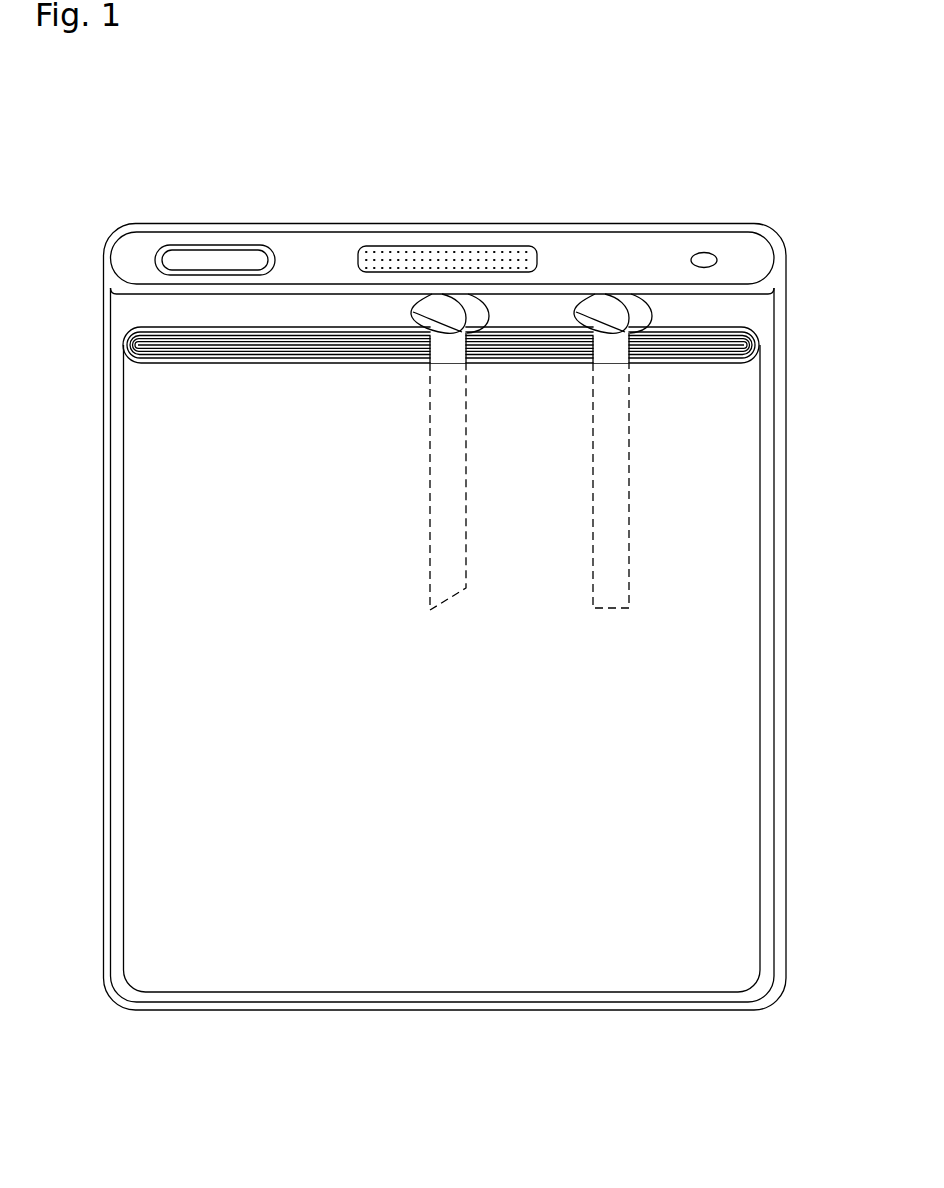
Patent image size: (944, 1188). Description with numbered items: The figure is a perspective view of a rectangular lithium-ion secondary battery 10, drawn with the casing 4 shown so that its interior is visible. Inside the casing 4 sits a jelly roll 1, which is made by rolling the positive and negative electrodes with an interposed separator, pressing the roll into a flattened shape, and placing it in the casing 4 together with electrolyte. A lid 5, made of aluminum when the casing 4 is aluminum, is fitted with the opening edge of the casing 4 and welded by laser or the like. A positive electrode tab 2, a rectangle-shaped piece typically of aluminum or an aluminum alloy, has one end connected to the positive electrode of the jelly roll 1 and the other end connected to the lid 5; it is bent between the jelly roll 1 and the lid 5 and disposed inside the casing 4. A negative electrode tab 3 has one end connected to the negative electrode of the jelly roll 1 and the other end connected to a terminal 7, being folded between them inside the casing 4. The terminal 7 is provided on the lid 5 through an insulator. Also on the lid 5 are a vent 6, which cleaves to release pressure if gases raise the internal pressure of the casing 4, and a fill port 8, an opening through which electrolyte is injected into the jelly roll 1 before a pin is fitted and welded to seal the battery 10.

The lithium-ion secondary battery 10 is at (466, 125).
The jelly roll 1 is at (133, 636).
The positive electrode tab 2 is at (623, 450).
The negative electrode tab 3 is at (436, 452).
The casing 4 is at (105, 382).
The lid 5 is at (322, 247).
The vent 6 is at (224, 257).
The terminal 7 is at (447, 258).
The fill port 8 is at (704, 258).